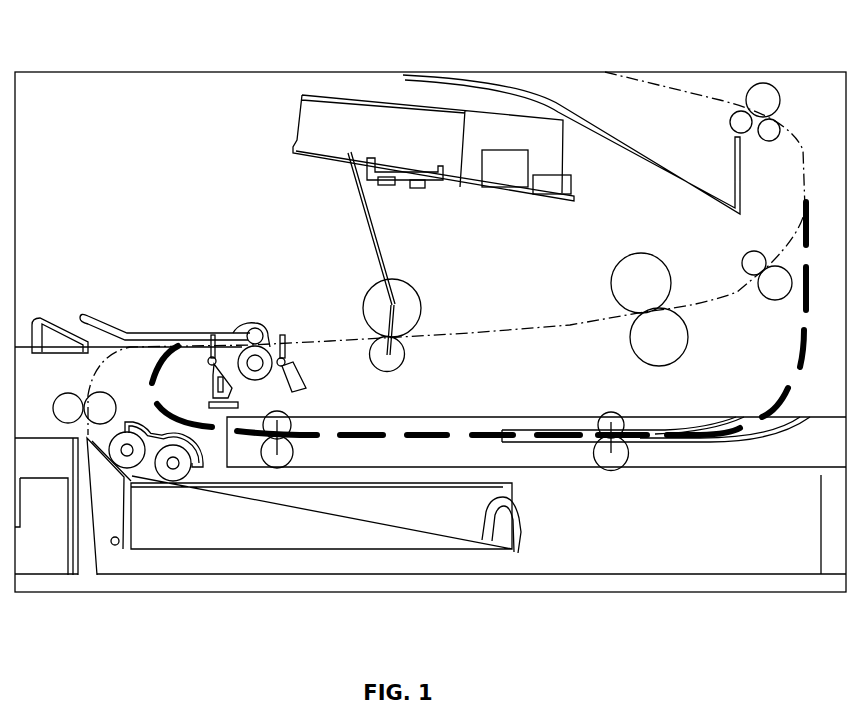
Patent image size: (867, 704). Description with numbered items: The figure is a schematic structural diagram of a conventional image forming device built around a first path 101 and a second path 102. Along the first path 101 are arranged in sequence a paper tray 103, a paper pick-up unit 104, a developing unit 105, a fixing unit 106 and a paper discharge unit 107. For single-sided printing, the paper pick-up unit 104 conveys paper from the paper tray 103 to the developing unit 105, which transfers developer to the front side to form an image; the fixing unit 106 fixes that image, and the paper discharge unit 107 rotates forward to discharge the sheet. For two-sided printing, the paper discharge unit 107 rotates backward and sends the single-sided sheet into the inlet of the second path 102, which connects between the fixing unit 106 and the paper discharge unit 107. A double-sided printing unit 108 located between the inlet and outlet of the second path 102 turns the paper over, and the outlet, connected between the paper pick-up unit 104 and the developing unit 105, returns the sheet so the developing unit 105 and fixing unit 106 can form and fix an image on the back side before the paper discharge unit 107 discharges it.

The first path 101 is at (478, 337).
The second path 102 is at (447, 433).
The paper tray 103 is at (282, 537).
The paper pick-up unit 104 is at (128, 403).
The developing unit 105 is at (368, 312).
The fixing unit 106 is at (628, 270).
The paper discharge unit 107 is at (765, 92).
The double-sided printing unit 108 is at (282, 412).